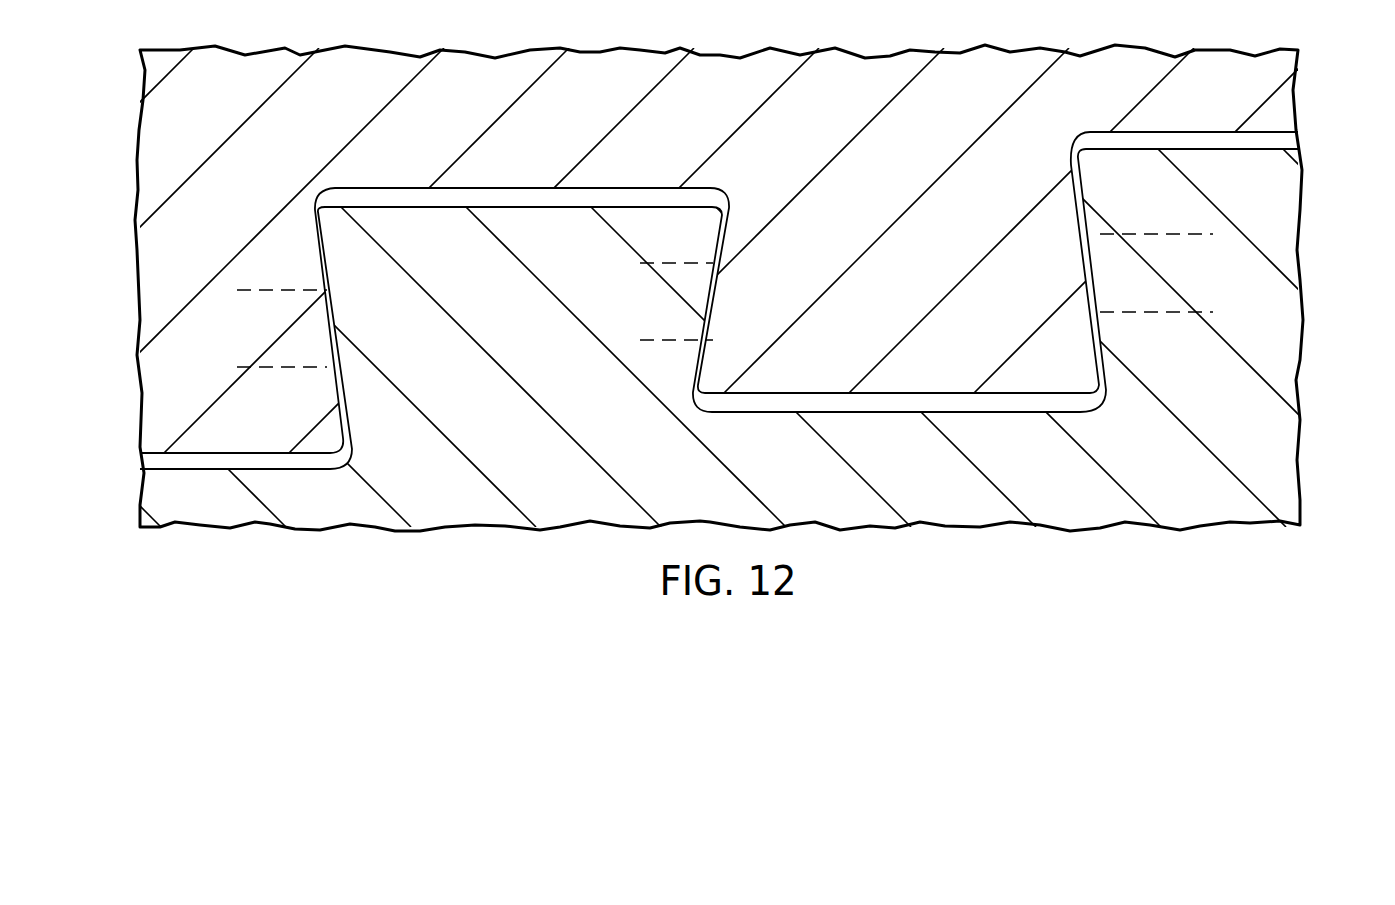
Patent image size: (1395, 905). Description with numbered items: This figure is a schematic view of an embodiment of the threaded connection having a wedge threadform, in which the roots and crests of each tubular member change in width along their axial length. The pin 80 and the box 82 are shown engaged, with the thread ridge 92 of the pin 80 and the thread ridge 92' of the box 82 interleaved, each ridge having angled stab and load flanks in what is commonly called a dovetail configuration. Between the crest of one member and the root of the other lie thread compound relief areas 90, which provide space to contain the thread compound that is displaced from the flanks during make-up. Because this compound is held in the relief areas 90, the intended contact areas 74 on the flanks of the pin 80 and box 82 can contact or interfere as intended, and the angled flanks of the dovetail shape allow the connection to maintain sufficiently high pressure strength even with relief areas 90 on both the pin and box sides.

The intended contact areas 74 is at (240, 290).
The pin 80 is at (1283, 487).
The box 82 is at (140, 290).
The thread compound relief areas 90 is at (322, 207).
The thread ridge of the pin 92 is at (525, 328).
The thread ridge of the box 92' is at (795, 259).